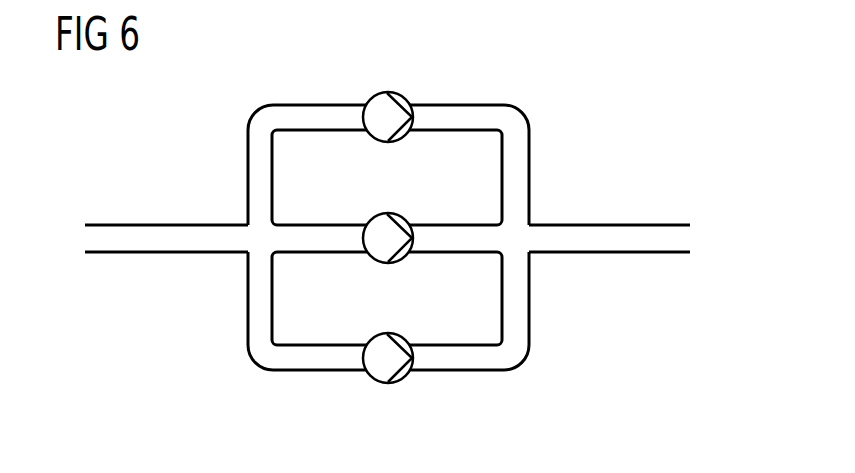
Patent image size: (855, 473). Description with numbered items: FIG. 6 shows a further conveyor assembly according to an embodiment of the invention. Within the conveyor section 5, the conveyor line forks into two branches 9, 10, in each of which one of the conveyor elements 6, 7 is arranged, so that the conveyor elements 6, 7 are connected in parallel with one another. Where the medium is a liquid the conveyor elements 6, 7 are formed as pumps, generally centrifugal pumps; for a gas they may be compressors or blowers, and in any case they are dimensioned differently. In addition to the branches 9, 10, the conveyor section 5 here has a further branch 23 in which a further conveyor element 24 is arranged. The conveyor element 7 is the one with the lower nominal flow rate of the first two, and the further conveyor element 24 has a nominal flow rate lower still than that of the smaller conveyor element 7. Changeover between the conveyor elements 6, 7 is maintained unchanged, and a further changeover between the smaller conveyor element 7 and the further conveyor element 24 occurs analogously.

The conveyor section 5 is at (387, 238).
The conveyor element 6 is at (373, 92).
The conveyor element 7 is at (376, 214).
The branch 9 is at (455, 104).
The branch 10 is at (456, 224).
The further branch 23 is at (460, 372).
The further conveyor element 24 is at (370, 382).